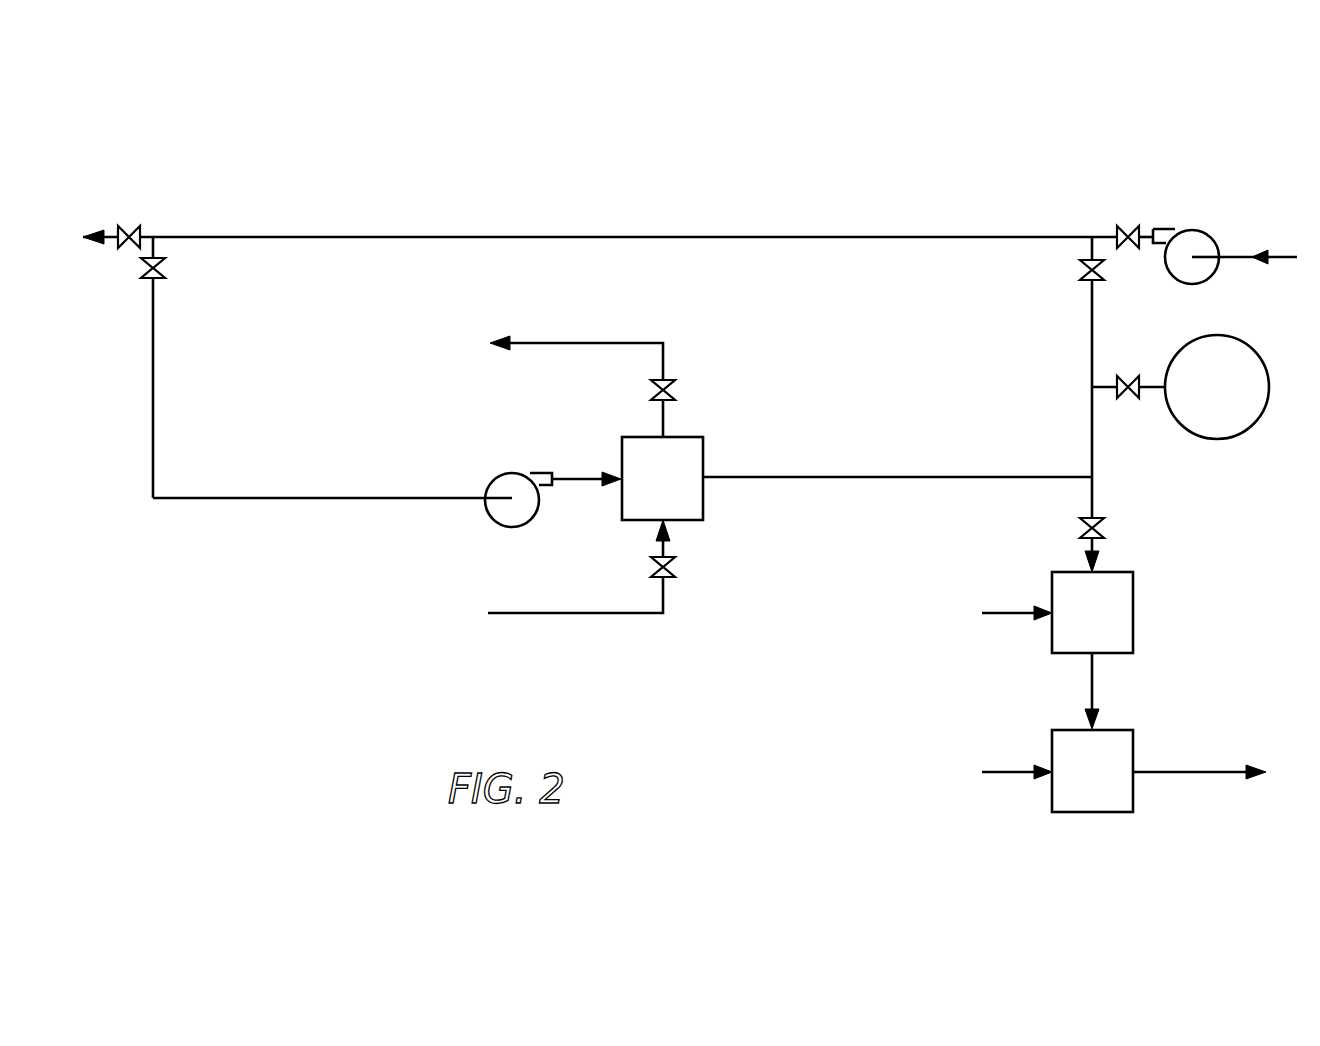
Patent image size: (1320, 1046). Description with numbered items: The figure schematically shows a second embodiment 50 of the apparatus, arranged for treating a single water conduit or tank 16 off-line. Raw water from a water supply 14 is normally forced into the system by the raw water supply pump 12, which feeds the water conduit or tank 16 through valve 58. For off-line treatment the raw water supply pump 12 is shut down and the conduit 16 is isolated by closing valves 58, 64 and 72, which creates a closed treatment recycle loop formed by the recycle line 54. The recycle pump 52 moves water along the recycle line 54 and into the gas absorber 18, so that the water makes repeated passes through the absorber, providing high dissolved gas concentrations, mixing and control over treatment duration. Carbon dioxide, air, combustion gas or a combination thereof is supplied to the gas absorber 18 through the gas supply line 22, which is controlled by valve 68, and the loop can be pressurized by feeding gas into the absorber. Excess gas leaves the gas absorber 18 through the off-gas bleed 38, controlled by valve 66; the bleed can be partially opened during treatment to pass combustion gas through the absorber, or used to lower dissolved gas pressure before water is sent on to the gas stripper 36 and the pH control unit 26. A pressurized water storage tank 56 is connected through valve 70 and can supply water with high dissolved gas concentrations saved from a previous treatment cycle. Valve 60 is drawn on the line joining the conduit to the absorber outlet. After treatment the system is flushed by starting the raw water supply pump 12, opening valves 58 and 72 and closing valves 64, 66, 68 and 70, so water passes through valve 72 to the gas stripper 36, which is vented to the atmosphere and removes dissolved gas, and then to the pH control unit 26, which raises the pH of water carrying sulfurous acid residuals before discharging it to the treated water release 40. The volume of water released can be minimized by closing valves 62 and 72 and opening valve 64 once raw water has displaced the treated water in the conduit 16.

The second embodiment 50 is at (802, 173).
The water conduit or tank 16 is at (528, 236).
The valve 64 is at (133, 225).
The valve 62 is at (143, 276).
The recycle line 54 is at (390, 498).
The recycle pump 52 is at (505, 473).
The gas absorber 18 is at (857, 478).
The off-gas bleed 38 is at (585, 343).
The valve 66 is at (673, 390).
The gas supply line 22 is at (555, 613).
The valve 68 is at (673, 569).
The valve 60 is at (1086, 280).
The valve 58 is at (1128, 248).
The raw water supply pump 12 is at (1197, 231).
The water supply 14 is at (1270, 257).
The valve 70 is at (1128, 377).
The pressurized water storage tank 56 is at (1217, 387).
The valve 72 is at (1080, 528).
The gas stripper 36 is at (1037, 650).
The pH control unit 26 is at (967, 771).
The treated water release 40 is at (1185, 773).